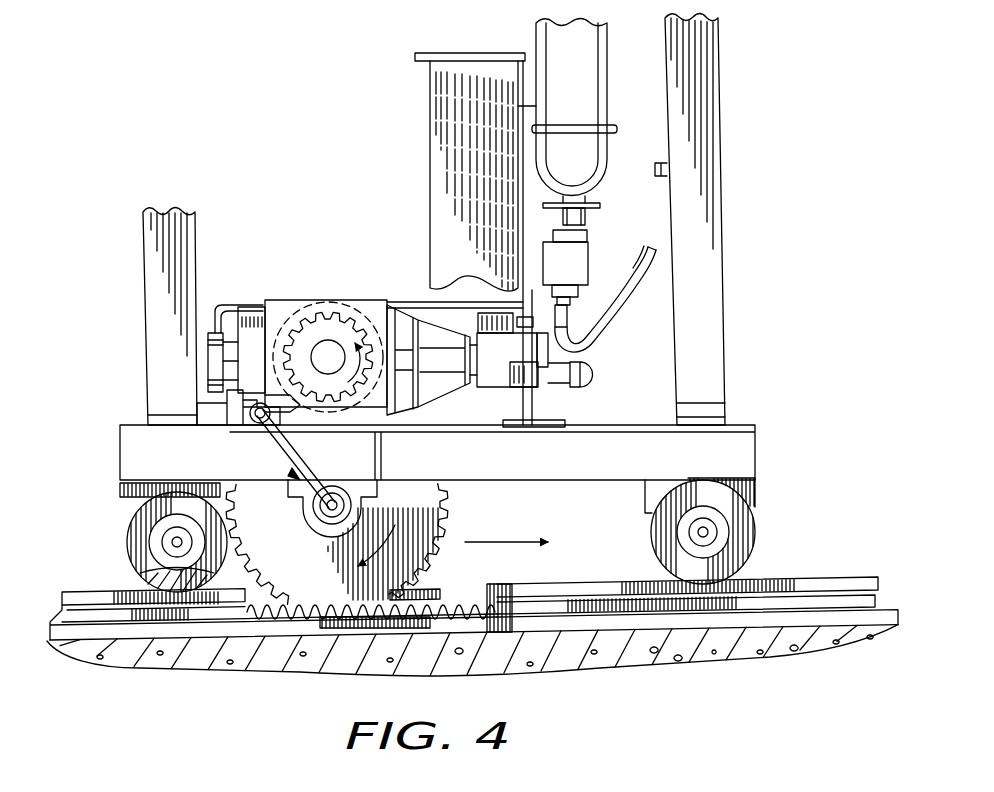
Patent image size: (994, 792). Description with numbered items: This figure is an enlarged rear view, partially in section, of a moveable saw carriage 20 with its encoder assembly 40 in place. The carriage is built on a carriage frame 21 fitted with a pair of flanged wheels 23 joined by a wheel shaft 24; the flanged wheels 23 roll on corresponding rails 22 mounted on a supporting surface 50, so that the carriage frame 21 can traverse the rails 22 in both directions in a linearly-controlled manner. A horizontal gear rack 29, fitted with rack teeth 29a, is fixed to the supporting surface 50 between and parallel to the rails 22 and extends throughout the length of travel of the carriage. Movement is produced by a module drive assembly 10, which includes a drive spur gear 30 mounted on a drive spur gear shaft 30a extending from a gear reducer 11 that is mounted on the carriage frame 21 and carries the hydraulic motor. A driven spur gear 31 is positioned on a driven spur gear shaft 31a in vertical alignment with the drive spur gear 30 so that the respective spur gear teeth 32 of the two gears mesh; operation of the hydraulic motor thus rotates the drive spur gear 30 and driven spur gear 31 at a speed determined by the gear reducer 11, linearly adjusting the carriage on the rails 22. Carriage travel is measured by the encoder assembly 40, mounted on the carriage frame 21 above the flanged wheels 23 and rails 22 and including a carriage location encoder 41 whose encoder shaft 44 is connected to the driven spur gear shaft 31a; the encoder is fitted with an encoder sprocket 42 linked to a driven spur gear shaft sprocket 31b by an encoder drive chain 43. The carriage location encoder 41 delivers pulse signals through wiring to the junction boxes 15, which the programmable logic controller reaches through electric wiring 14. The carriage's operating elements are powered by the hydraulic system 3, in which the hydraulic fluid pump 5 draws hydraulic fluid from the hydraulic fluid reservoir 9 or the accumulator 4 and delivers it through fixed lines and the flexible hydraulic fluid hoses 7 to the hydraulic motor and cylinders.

The hydraulic system 3 is at (412, 233).
The accumulator 4 is at (613, 114).
The hydraulic fluid pump 5 is at (500, 362).
The flexible hydraulic fluid hose 7 is at (590, 338).
The hydraulic fluid reservoir 9 is at (422, 175).
The module drive assembly 10 is at (176, 356).
The gear reducer 11 is at (250, 318).
The electric wiring 14 is at (612, 258).
The junction box 15 is at (578, 276).
The moveable saw carriage 20 is at (734, 82).
The carriage frame 21 is at (141, 270).
The rail 22 is at (110, 592).
The flanged wheel 23 is at (129, 540).
The wheel shaft 24 is at (177, 542).
The horizontal gear rack 29 is at (497, 626).
The rack teeth 29a is at (448, 603).
The drive spur gear 30 is at (355, 318).
The drive spur gear shaft 30a is at (330, 348).
The driven spur gear 31 is at (407, 495).
The driven spur gear shaft 31a is at (333, 486).
The driven spur gear shaft sprocket 31b is at (314, 521).
The spur gear teeth 32 is at (290, 330).
The encoder assembly 40 is at (262, 443).
The carriage location encoder 41 is at (252, 398).
The encoder sprocket 42 is at (290, 410).
The encoder drive chain 43 is at (273, 480).
The encoder shaft 44 is at (250, 419).
The supporting surface 50 is at (615, 582).